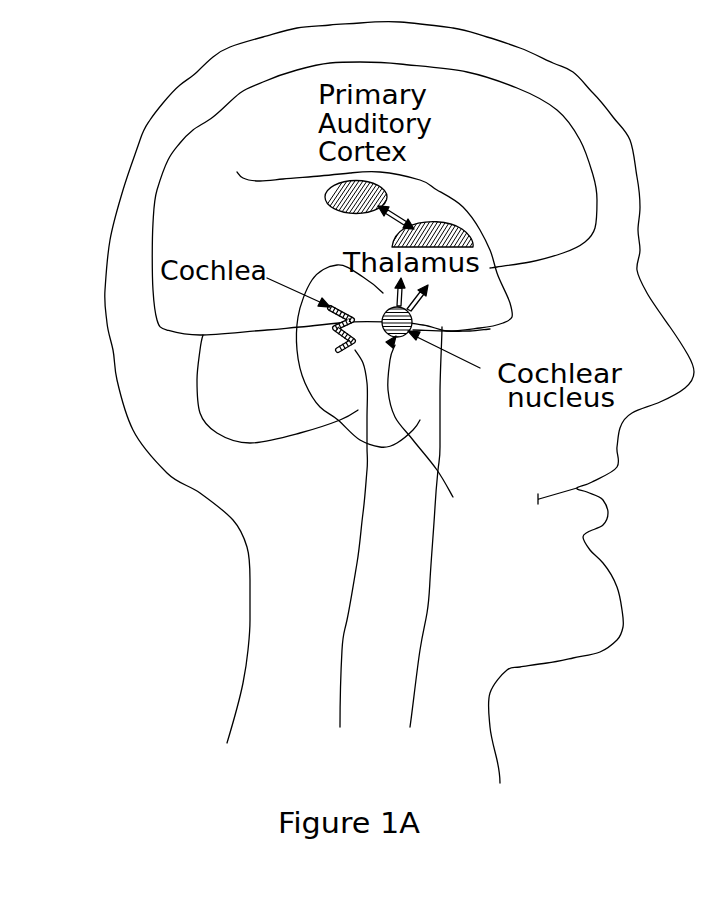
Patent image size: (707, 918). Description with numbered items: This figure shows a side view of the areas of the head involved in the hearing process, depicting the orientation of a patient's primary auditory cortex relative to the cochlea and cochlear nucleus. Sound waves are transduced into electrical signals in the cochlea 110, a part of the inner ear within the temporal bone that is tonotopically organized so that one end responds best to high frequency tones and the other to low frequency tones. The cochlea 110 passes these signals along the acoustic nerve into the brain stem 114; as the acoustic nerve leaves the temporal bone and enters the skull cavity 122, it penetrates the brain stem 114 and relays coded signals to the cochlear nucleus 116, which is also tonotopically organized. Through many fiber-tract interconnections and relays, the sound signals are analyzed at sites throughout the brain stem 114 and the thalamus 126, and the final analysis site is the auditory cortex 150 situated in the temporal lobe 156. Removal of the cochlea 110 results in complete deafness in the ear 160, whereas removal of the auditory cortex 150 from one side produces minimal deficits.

The cochlea 110 is at (331, 295).
The brain stem 114 is at (440, 312).
The cochlear nucleus 116 is at (447, 431).
The skull cavity 122 is at (533, 274).
The thalamus 126 is at (437, 218).
The auditory cortex 150 is at (411, 169).
The temporal lobe 156 is at (233, 123).
The ear 160 is at (333, 491).